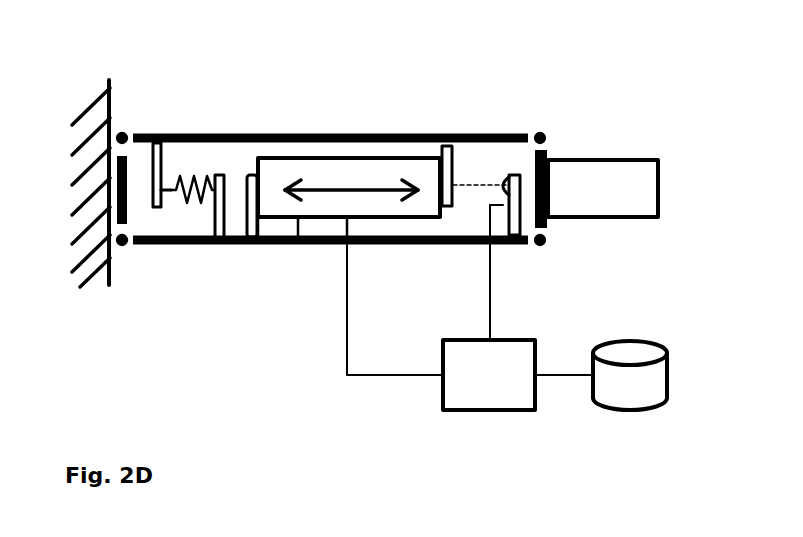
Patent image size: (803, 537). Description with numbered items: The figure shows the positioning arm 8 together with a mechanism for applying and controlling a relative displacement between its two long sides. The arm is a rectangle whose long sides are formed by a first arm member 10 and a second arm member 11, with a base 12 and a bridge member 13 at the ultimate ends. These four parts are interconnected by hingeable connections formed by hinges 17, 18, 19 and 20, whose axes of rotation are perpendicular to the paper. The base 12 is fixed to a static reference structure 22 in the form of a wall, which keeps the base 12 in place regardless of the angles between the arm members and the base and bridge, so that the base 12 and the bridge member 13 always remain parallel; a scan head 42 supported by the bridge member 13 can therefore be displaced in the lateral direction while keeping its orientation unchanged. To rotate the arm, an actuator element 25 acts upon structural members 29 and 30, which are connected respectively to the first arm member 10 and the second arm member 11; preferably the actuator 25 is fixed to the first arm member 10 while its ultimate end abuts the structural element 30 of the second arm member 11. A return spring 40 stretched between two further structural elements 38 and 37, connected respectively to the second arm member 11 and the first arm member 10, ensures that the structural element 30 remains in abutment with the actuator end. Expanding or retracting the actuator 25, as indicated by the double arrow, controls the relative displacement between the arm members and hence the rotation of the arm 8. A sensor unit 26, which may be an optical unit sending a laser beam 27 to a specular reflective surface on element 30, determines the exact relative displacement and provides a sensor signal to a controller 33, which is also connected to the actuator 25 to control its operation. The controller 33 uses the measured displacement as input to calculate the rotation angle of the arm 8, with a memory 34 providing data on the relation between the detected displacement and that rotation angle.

The positioning arm 8 is at (352, 120).
The first arm member 10 is at (230, 250).
The second arm member 11 is at (254, 133).
The base 12 is at (128, 207).
The bridge member 13 is at (545, 222).
The hinge 17 is at (122, 247).
The hinge 18 is at (541, 248).
The hinge 19 is at (544, 137).
The hinge 20 is at (122, 132).
The static reference structure 22 is at (116, 98).
The actuator element 25 is at (300, 245).
The sensor unit 26 is at (517, 173).
The laser beam 27 is at (473, 184).
The structural member 29 is at (250, 176).
The structural member 30 is at (463, 200).
The controller 33 is at (480, 410).
The memory 34 is at (630, 410).
The further structural element 37 is at (200, 230).
The further structural element 38 is at (163, 157).
The return spring 40 is at (178, 210).
The scan head 42 is at (640, 160).